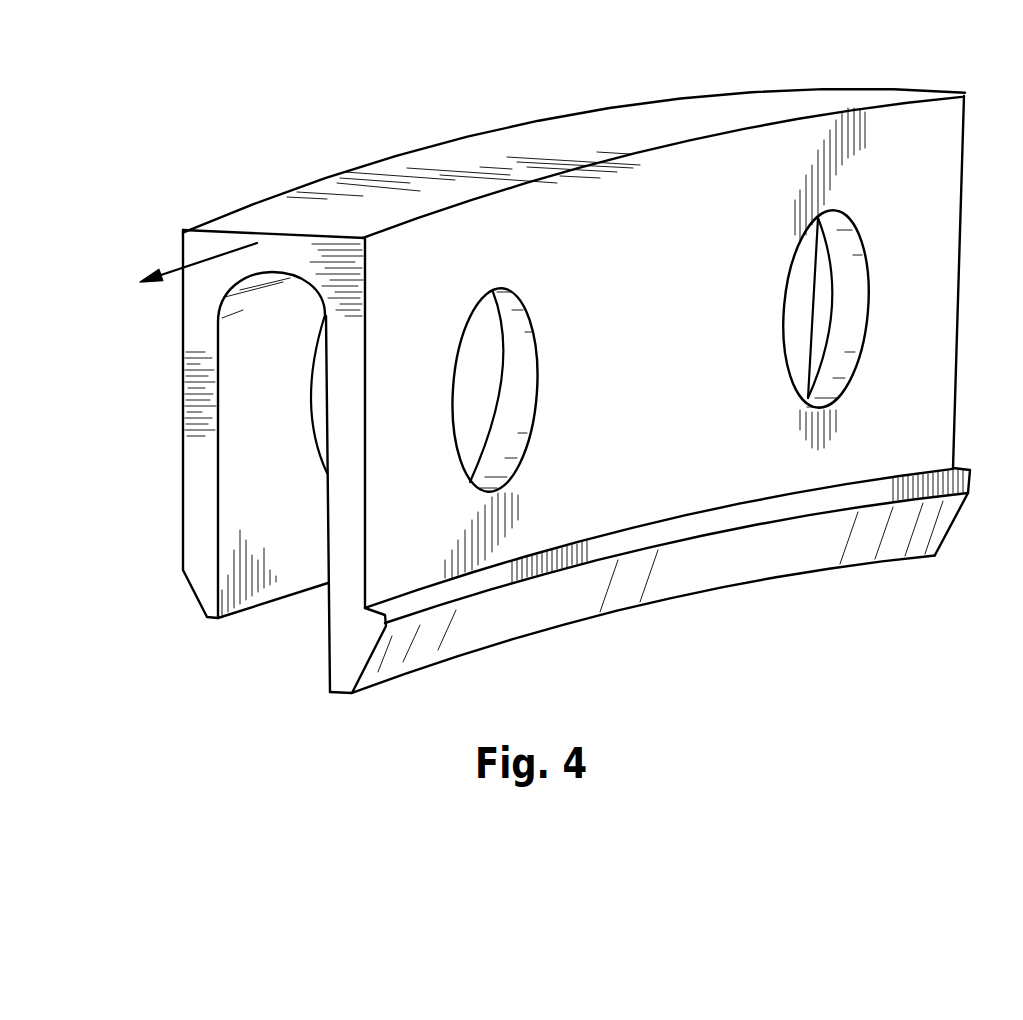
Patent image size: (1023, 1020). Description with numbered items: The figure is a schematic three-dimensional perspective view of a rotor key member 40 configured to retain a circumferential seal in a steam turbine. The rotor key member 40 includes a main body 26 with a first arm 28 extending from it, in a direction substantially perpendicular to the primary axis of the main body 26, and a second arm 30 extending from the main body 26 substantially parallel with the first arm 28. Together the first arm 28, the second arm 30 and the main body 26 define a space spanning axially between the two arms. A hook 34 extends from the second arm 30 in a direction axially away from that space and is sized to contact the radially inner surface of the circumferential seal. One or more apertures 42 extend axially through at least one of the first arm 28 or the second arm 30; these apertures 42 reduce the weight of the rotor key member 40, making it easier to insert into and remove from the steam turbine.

The rotor key member 40 is at (103, 116).
The main body 26 is at (567, 152).
The first arm 28 is at (237, 505).
The second arm 30 is at (657, 398).
The hook 34 is at (632, 587).
The apertures 42 is at (299, 383).